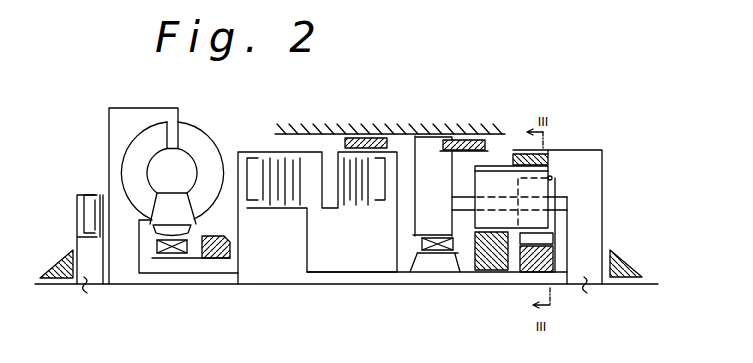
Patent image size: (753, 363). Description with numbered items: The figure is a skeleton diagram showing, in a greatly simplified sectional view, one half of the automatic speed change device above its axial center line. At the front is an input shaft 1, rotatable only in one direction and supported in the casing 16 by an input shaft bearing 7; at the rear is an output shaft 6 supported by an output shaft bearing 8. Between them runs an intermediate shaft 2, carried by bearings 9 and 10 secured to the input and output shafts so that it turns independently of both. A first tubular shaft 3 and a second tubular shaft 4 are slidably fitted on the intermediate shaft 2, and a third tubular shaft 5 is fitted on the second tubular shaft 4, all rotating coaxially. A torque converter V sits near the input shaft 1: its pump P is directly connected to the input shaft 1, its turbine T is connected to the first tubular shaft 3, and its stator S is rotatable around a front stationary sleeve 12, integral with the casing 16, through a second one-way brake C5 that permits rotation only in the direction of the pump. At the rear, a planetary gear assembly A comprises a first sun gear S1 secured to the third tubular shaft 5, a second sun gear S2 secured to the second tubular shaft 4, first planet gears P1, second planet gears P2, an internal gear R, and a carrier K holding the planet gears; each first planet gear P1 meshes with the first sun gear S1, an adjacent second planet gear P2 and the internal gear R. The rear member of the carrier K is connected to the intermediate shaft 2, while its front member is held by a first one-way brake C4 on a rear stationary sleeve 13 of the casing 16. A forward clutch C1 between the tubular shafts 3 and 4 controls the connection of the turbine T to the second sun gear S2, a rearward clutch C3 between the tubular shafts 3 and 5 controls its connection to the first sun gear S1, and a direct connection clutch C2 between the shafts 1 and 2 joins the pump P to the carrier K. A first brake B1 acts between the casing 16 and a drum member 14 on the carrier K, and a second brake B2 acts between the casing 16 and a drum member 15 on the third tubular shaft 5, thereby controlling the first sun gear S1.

The torque converter V is at (135, 118).
The turbine T is at (130, 162).
The pump P is at (207, 151).
The stator S is at (170, 205).
The direct connection clutch C2 is at (86, 214).
The input shaft bearing 7 is at (56, 264).
The input shaft 1 is at (55, 286).
The bearing 9 is at (88, 292).
The second one-way brake C5 is at (160, 257).
The first tubular shaft 3 is at (183, 275).
The front stationary sleeve 12 is at (197, 262).
The casing 16 is at (215, 238).
The forward clutch C1 is at (296, 185).
The intermediate shaft 2 is at (315, 286).
The second tubular shaft 4 is at (357, 274).
The rearward clutch C3 is at (342, 178).
The drum member 15 is at (342, 181).
The second brake B2 is at (368, 139).
The drum member 14 is at (437, 136).
The first brake B1 is at (470, 140).
The first planet gears P1 is at (492, 183).
The internal gear R is at (561, 144).
The planetary gear assembly A is at (609, 136).
The carrier K is at (562, 194).
The second planet gears P2 is at (547, 237).
The output shaft bearing 8 is at (622, 264).
The bearing 10 is at (588, 292).
The output shaft 6 is at (618, 287).
The rear stationary sleeve 13 is at (416, 273).
The third tubular shaft 5 is at (435, 273).
The first one-way brake C4 is at (453, 273).
The first sun gear S1 is at (485, 273).
The second sun gear S2 is at (517, 273).